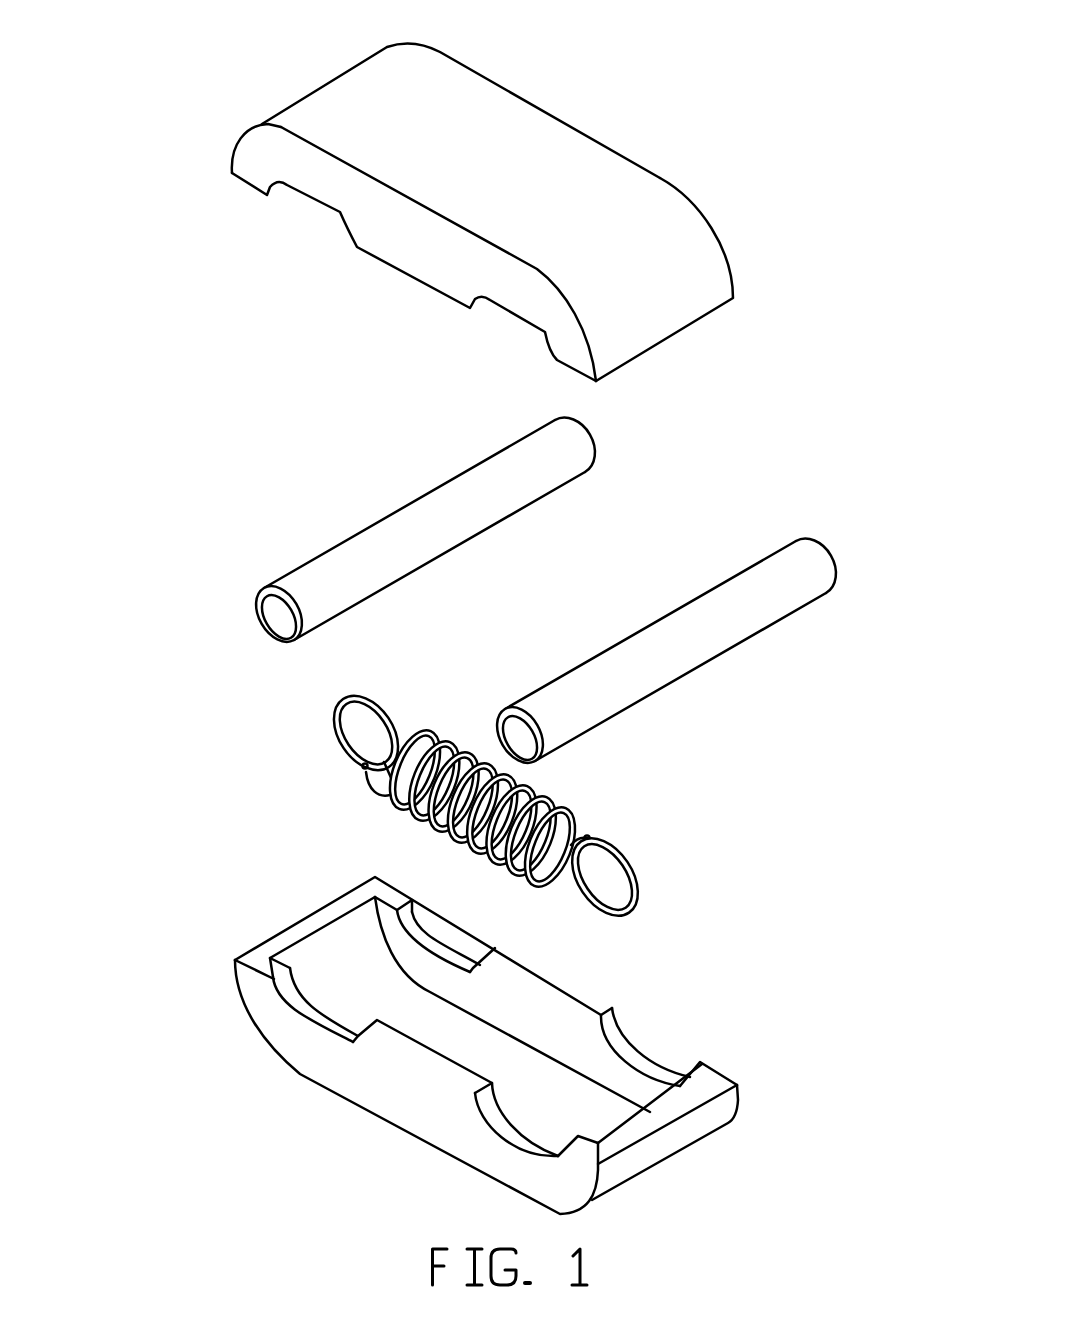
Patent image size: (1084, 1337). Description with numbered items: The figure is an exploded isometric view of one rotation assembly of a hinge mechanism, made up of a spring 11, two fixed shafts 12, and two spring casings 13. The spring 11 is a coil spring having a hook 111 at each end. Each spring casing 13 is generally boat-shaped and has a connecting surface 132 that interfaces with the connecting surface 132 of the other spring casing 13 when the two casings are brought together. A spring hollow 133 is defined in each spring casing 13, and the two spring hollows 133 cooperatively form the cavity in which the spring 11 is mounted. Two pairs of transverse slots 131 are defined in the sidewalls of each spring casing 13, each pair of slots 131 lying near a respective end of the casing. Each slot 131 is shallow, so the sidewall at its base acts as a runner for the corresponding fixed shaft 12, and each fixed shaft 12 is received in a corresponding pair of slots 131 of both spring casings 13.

The spring 11 is at (516, 806).
The hook 111 is at (618, 847).
The fixed shaft 12 is at (458, 505).
The spring casing 13 is at (496, 628).
The slot 131 is at (303, 1008).
The connecting surface 132 is at (713, 1084).
The spring hollow 133 is at (400, 1003).